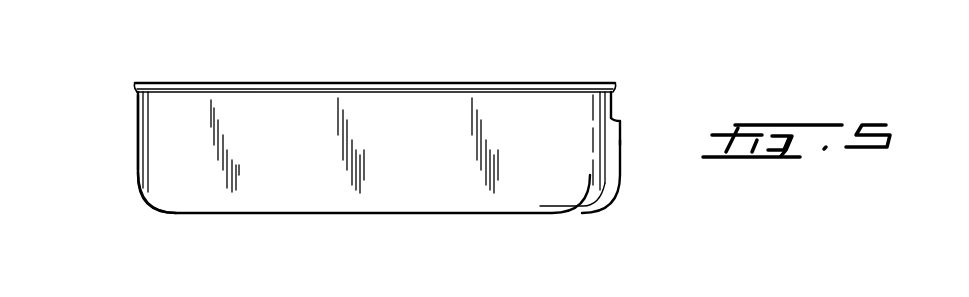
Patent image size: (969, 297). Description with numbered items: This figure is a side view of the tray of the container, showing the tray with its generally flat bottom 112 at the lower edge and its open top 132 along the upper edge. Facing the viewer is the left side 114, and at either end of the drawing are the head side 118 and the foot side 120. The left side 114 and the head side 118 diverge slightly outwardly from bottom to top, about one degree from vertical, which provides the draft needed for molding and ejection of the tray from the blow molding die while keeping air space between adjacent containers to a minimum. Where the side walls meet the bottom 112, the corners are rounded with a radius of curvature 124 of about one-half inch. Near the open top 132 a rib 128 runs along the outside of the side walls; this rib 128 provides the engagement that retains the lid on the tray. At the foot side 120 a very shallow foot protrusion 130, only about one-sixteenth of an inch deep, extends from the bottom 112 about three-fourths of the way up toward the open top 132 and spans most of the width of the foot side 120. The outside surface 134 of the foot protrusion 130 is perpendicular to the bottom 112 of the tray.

The bottom 112 is at (458, 216).
The left side 114 is at (438, 163).
The head side 118 is at (138, 116).
The foot side 120 is at (618, 100).
The radius of curvature 124 is at (152, 200).
The rib 128 is at (572, 94).
The foot protrusion 130 is at (622, 172).
The open top 132 is at (495, 82).
The outside surface 134 is at (620, 140).